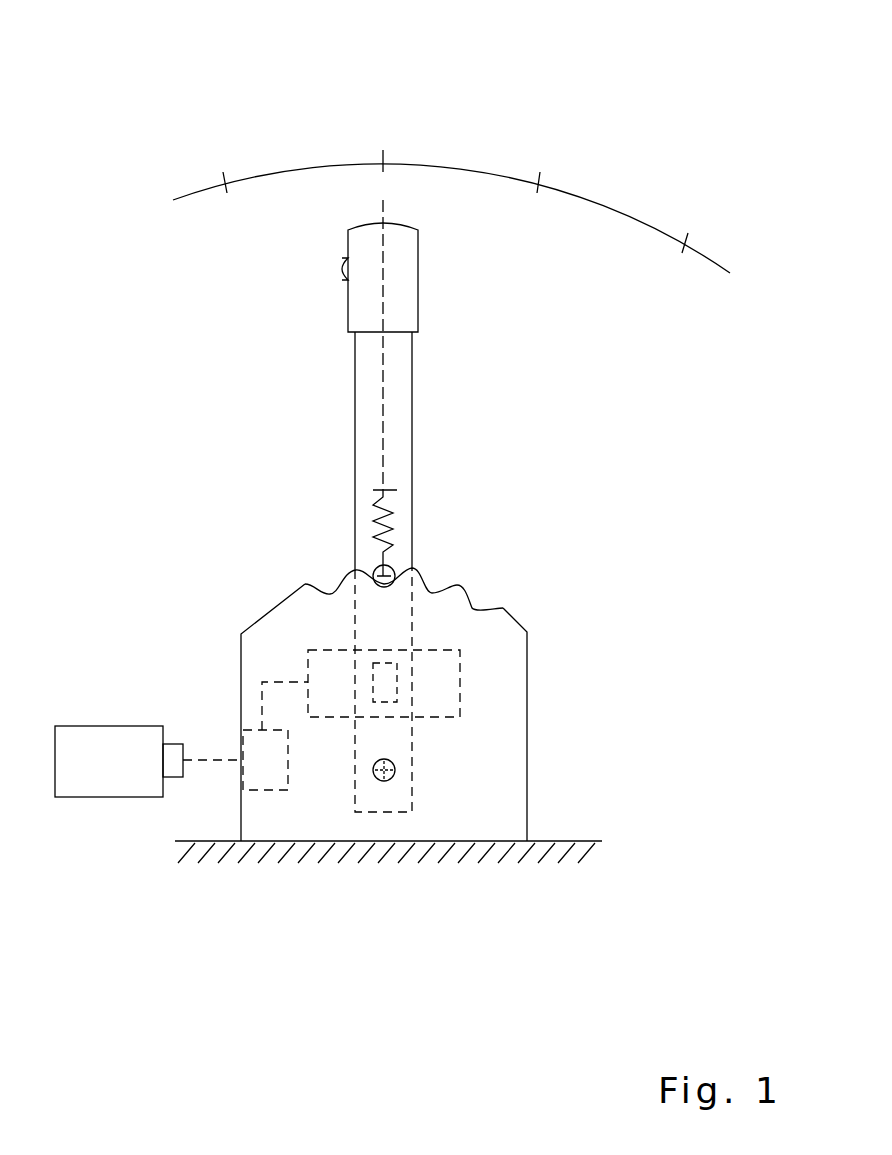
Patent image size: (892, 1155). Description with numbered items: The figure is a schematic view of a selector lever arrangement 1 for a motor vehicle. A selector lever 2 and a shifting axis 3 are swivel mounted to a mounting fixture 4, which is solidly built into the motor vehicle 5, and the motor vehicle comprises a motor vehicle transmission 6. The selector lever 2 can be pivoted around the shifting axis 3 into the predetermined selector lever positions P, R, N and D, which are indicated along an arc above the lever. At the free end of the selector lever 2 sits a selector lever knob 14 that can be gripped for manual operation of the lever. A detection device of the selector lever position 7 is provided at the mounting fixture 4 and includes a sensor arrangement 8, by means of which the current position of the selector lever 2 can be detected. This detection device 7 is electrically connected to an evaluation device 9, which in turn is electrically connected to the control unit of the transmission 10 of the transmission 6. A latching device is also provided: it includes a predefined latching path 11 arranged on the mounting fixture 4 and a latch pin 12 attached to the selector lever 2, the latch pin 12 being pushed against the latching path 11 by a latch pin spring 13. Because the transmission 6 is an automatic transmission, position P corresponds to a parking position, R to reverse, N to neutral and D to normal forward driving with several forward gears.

The selector lever arrangement 1 is at (155, 126).
The selector lever 2 is at (368, 377).
The shifting axis 3 is at (384, 782).
The mounting fixture 4 is at (510, 733).
The motor vehicle 5 is at (553, 841).
The motor vehicle transmission 6 is at (107, 777).
The detection device of the selector lever position 7 is at (453, 662).
The sensor arrangement 8 is at (378, 680).
The evaluation device 9 is at (270, 777).
The control unit of the transmission 10 is at (175, 758).
The latching path 11 is at (473, 595).
The latch pin 12 is at (374, 569).
The latch pin spring 13 is at (393, 518).
The selector lever knob 14 is at (363, 250).